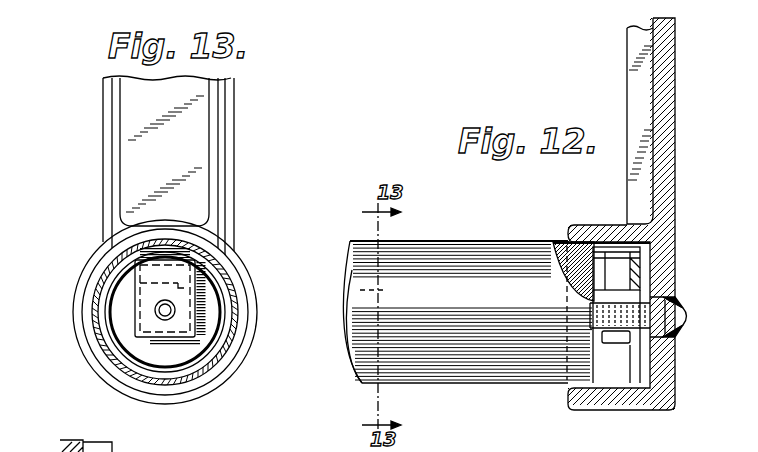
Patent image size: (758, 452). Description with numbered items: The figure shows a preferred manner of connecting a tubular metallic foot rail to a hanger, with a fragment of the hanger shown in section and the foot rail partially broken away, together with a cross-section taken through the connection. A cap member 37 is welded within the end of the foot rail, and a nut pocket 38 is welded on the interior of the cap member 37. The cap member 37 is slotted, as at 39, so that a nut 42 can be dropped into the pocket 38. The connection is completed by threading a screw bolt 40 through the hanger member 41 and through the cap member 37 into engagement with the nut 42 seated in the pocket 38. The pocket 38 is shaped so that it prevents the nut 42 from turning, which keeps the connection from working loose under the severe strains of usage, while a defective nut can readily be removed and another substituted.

In FIG. 13, the cap member 37 is at (127, 278).
In FIG. 12, the cap member 37 is at (600, 241).
In FIG. 13, the nut pocket 38 is at (148, 294).
In FIG. 12, the nut pocket 38 is at (630, 268).
In FIG. 13, the slot 39 is at (188, 233).
In FIG. 12, the slot 39 is at (650, 243).
In FIG. 13, the screw bolt 40 is at (158, 314).
In FIG. 12, the screw bolt 40 is at (684, 318).
In FIG. 13, the hanger member 41 is at (200, 125).
In FIG. 12, the hanger member 41 is at (467, 312).
In FIG. 13, the nut 42 is at (207, 290).
In FIG. 12, the nut 42 is at (650, 348).